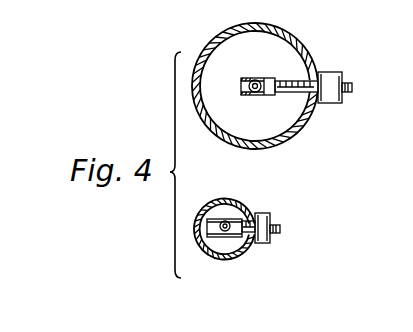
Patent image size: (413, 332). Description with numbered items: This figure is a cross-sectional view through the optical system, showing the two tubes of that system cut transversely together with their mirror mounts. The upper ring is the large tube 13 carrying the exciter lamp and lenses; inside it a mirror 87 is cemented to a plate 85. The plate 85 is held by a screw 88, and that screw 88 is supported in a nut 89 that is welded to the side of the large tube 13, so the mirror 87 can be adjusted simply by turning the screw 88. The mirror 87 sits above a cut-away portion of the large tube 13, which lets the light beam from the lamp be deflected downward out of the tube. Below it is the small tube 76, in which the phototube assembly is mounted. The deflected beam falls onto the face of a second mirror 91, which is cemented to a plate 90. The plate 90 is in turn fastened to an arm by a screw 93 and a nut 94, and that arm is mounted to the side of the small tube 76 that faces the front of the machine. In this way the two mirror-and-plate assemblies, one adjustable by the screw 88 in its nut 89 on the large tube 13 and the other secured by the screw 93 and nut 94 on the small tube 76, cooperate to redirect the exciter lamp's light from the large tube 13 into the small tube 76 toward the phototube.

The ring housing 13 is at (207, 46).
The plate 85 is at (250, 93).
The mirror 87 is at (260, 82).
The screw 88 is at (294, 93).
The nut 89 is at (322, 74).
The small tube 76 is at (214, 202).
The plate 90 is at (214, 237).
The mirror 91 is at (225, 221).
The screw 93 is at (249, 215).
The nut 94 is at (272, 224).